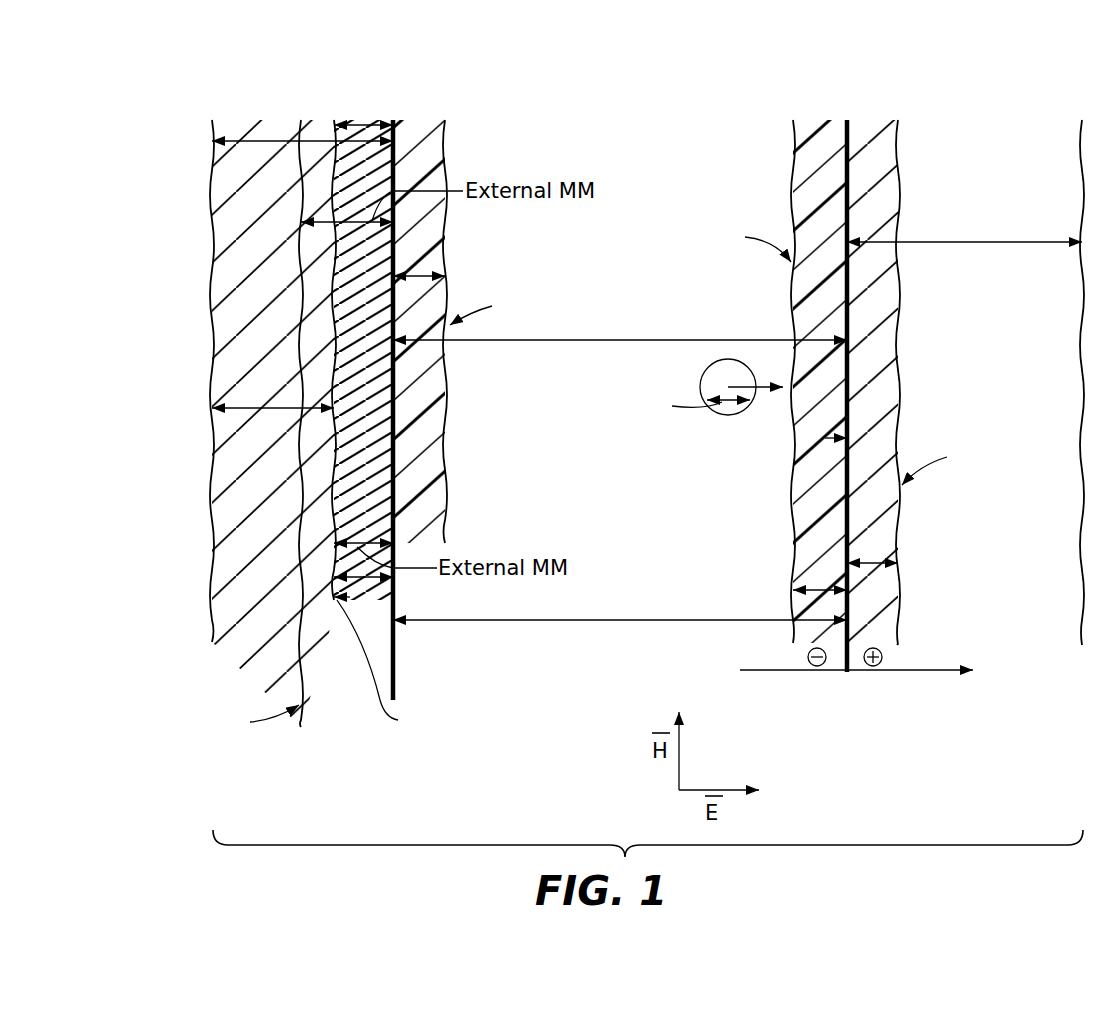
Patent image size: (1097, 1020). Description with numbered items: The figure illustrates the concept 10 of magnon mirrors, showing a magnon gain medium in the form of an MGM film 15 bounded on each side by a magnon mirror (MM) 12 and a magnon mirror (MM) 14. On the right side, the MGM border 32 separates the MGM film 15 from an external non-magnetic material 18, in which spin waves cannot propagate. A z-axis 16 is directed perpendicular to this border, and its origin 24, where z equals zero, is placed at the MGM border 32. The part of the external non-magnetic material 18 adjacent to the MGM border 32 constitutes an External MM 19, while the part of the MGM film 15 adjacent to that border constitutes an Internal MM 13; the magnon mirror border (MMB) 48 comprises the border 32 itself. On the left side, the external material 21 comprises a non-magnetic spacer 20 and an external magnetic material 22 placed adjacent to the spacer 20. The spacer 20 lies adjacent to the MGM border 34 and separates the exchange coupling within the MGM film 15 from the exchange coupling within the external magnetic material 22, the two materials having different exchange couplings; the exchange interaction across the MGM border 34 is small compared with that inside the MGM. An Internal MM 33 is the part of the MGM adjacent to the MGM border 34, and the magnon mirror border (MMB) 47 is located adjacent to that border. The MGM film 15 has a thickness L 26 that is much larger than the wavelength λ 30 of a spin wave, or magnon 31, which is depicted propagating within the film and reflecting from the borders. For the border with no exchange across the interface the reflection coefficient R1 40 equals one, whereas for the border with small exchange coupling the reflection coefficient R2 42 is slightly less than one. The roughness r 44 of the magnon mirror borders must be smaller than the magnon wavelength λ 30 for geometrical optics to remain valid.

The concept of magnon mirrors 10 is at (228, 770).
The magnon mirror 12 is at (791, 548).
The internal magnon mirror 13 is at (870, 755).
The magnon mirror 14 is at (450, 533).
The MGM film 15 is at (585, 338).
The z-axis 16 is at (988, 683).
The external non-magnetic material 18 is at (933, 243).
The external magnon mirror 19 is at (872, 560).
The non-magnetic spacer 20 is at (380, 585).
The external material 21 is at (258, 140).
The external magnetic material 22 is at (243, 408).
The origin 24 is at (873, 688).
The thickness L 26 is at (615, 605).
The wave length 30 is at (701, 387).
The spin-wave (magnon) 31 is at (705, 455).
The MGM border 32 is at (851, 137).
The internal magnon mirror 33 is at (413, 277).
The MGM border 34 is at (396, 128).
The reflection coefficient R1 40 is at (793, 468).
The reflection coefficient R2 42 is at (400, 445).
The roughness 44 is at (847, 140).
The magnon mirror border 47 is at (353, 122).
The magnon mirror border 48 is at (845, 158).